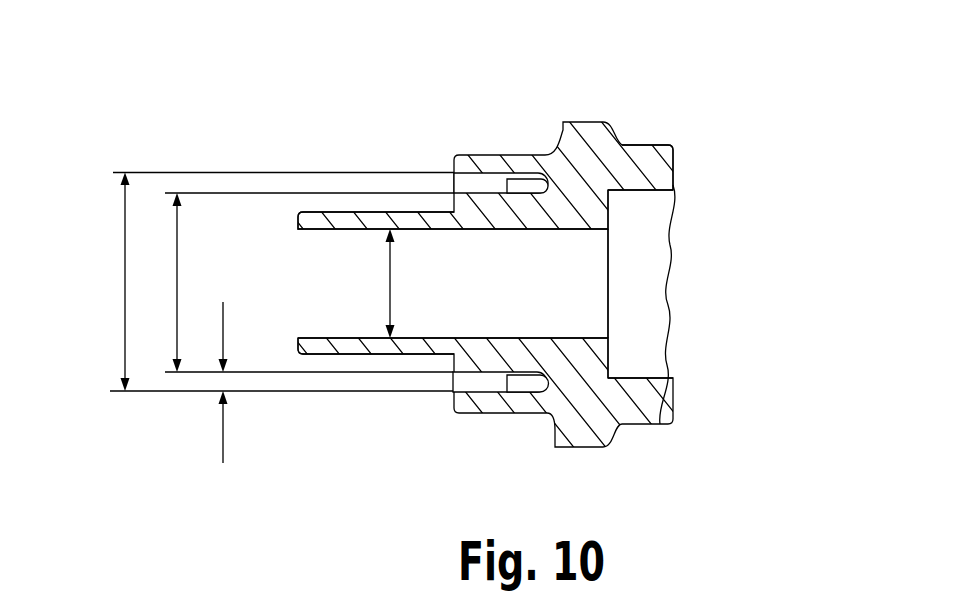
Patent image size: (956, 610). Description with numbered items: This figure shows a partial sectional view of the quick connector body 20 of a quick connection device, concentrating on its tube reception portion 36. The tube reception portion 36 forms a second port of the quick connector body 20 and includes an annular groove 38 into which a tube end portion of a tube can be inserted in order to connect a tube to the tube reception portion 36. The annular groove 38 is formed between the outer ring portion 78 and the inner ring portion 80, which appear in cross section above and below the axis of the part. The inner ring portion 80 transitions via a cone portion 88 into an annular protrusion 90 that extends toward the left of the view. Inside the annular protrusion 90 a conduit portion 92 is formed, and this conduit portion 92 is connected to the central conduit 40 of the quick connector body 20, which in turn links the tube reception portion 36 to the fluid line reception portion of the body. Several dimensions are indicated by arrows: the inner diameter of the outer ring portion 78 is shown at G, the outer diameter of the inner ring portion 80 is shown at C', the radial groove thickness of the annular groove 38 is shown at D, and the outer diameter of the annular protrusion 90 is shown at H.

The quick connector body 20 is at (646, 170).
The tube reception portion 36 is at (476, 112).
The annular groove 38 is at (520, 387).
The central conduit 40 is at (640, 233).
The outer ring portion 78 is at (519, 178).
The inner ring portion 80 is at (523, 358).
The cone portion 88 is at (453, 180).
The annular protrusion 90 is at (358, 218).
The conduit portion 92 is at (481, 303).
The inner diameter of the outer ring portion G is at (175, 267).
The outer diameter of the inner ring portion C' is at (249, 282).
The outer diameter of the annular protrusion H is at (390, 283).
The radial groove thickness of the annular groove D is at (223, 446).